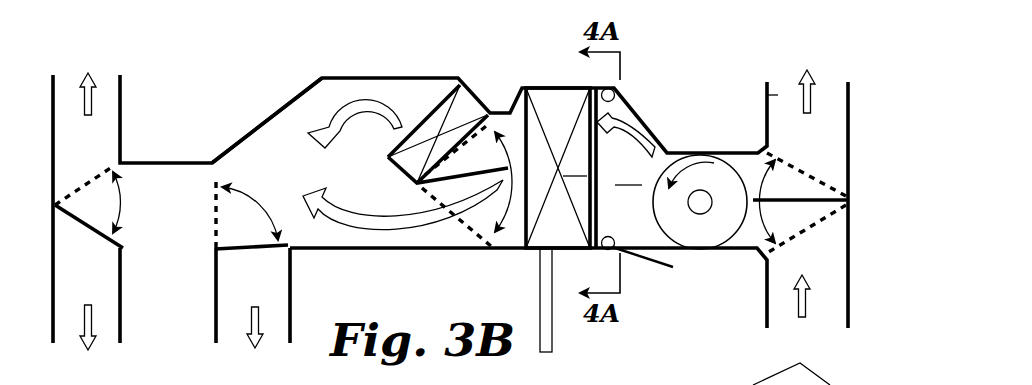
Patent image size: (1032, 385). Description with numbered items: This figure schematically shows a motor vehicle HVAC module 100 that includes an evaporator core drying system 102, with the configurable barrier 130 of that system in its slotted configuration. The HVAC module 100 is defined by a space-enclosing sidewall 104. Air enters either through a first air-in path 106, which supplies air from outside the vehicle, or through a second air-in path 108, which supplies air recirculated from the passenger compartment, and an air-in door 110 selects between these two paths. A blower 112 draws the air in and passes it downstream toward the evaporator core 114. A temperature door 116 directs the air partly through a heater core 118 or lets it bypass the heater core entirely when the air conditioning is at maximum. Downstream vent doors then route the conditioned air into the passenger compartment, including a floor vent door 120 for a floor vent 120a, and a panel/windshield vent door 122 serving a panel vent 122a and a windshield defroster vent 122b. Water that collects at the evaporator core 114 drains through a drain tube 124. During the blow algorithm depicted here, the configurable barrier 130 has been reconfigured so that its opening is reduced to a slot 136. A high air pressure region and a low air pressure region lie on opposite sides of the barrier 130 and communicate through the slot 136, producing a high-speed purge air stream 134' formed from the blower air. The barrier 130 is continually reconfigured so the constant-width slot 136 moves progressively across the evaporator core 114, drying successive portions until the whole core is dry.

The HVAC module 100 is at (451, 52).
The evaporator core drying system 102 is at (624, 258).
The sidewall 104 is at (282, 110).
The first air-in path 106 is at (767, 95).
The second air-in path 108 is at (782, 312).
The air-in door 110 is at (821, 208).
The blower 112 is at (712, 163).
The evaporator core 114 is at (547, 90).
The temperature door 116 is at (478, 175).
The heater core 118 is at (437, 105).
The floor vent door 120 is at (250, 250).
The floor vent 120a is at (263, 297).
The panel/windshield vent door 122 is at (85, 227).
The panel vent 122a is at (93, 292).
The windshield (defroster) vent 122b is at (105, 117).
The drain tube 124 is at (555, 286).
The configurable barrier 130 is at (618, 102).
The air stream 134' is at (673, 98).
The slot 136 is at (622, 110).